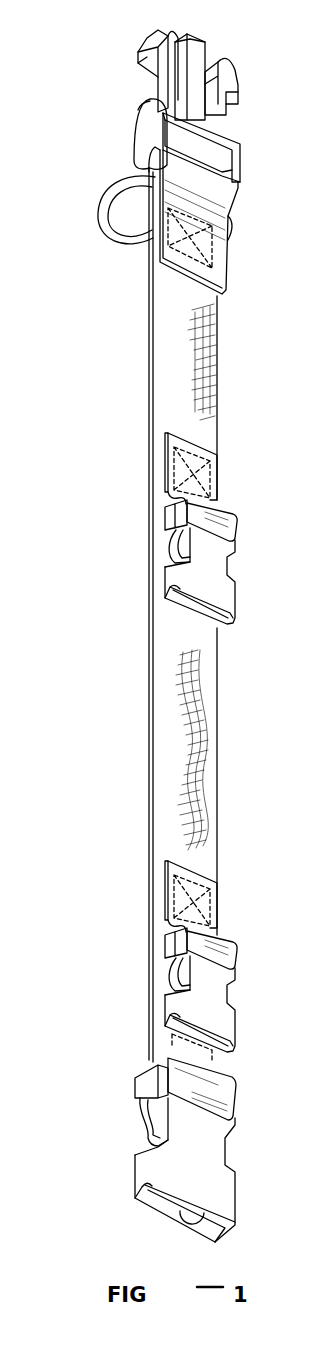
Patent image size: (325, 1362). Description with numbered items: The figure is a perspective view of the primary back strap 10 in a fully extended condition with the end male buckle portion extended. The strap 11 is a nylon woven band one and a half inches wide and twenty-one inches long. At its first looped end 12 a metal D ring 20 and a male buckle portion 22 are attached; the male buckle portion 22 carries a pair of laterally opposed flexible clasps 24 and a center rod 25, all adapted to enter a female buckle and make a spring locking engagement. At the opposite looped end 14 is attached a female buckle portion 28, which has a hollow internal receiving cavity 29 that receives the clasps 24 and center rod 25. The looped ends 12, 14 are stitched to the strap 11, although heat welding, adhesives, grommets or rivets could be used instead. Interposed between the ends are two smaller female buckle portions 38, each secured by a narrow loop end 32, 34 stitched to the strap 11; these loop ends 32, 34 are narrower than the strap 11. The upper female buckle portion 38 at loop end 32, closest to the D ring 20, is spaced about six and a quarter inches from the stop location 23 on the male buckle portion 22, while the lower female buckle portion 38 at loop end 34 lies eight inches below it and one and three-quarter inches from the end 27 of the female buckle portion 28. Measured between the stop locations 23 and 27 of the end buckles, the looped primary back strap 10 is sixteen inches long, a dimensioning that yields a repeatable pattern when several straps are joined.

The primary back strap 10 is at (254, 352).
The strap 11 is at (205, 718).
The first looped end 12 is at (215, 192).
The opposite looped end 14 is at (215, 1090).
The metal D ring 20 is at (124, 256).
The male buckle portion 22 is at (125, 119).
The stop location 23 is at (238, 134).
The flexible clasps 24 is at (225, 82).
The center rod 25 is at (192, 46).
The end of the female buckle 27 is at (185, 1226).
The female buckle portion 28 is at (130, 1150).
The hollow internal receiving cavity 29 is at (160, 1200).
The loop end 32 is at (182, 446).
The loop end 34 is at (183, 872).
The female buckle portions 38 is at (238, 572).